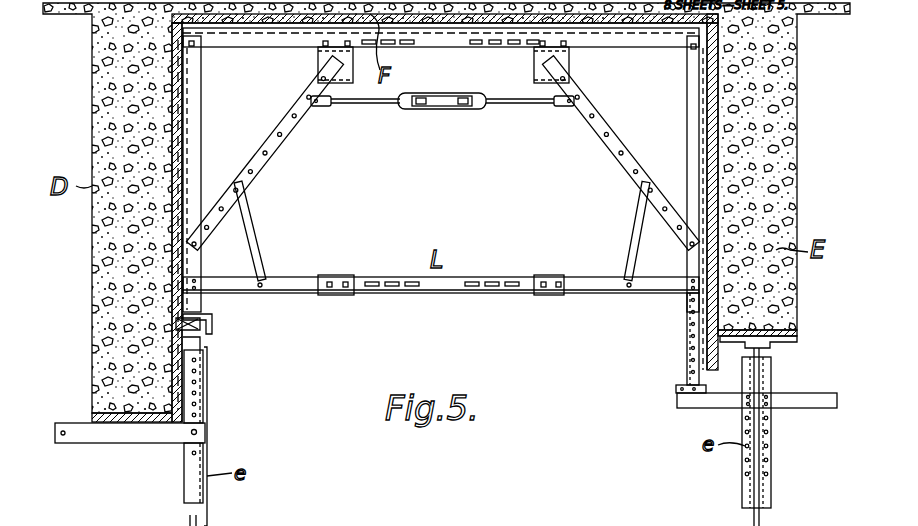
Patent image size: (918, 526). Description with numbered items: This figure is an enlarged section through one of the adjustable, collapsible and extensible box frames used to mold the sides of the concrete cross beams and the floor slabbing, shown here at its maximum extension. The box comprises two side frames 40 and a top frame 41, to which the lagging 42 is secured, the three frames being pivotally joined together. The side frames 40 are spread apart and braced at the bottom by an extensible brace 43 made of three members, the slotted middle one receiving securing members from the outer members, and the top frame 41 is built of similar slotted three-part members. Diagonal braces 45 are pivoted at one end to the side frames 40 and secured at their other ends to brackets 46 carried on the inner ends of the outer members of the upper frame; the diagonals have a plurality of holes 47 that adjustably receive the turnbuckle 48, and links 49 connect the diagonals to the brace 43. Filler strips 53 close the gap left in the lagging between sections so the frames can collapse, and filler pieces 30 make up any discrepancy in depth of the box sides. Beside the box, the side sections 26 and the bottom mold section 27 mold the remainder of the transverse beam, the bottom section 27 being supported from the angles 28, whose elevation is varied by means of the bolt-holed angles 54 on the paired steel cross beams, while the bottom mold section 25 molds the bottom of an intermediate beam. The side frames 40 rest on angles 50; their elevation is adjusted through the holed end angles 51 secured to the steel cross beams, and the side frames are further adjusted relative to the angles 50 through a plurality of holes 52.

The bottom mold section 25 is at (795, 334).
The side section 26 is at (178, 373).
The bottom mold section 27 is at (178, 403).
The angle 28 is at (108, 436).
The filler piece 30 is at (200, 326).
The side frame 40 is at (198, 128).
The top frame 41 is at (667, 47).
The lagging 42 is at (176, 160).
The extensible brace 43 is at (586, 292).
The diagonal brace 45 is at (266, 160).
The bracket 46 is at (322, 61).
The hole 47 is at (294, 124).
The turnbuckle 48 is at (445, 110).
The link 49 is at (256, 224).
The angle 50 is at (826, 378).
The end angle 51 is at (768, 489).
The hole 52 is at (687, 340).
The filler strip 53 is at (438, 15).
The angle 54 is at (192, 474).